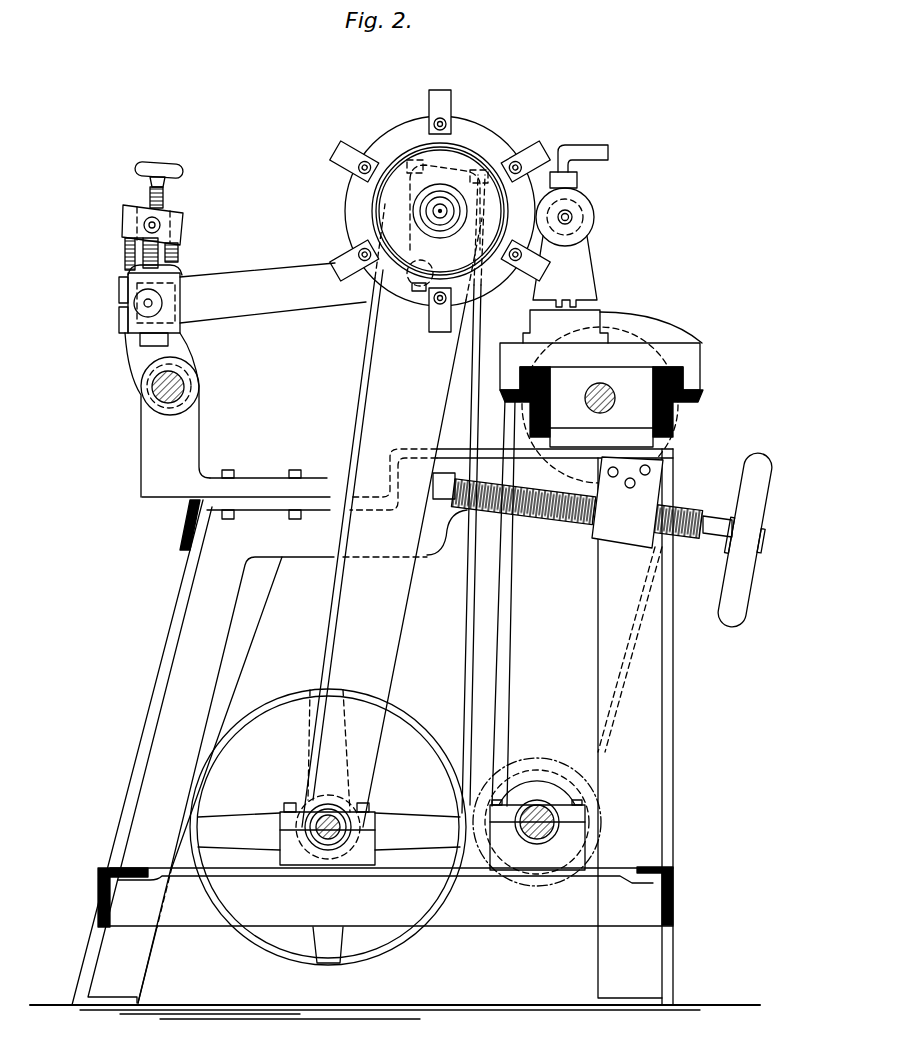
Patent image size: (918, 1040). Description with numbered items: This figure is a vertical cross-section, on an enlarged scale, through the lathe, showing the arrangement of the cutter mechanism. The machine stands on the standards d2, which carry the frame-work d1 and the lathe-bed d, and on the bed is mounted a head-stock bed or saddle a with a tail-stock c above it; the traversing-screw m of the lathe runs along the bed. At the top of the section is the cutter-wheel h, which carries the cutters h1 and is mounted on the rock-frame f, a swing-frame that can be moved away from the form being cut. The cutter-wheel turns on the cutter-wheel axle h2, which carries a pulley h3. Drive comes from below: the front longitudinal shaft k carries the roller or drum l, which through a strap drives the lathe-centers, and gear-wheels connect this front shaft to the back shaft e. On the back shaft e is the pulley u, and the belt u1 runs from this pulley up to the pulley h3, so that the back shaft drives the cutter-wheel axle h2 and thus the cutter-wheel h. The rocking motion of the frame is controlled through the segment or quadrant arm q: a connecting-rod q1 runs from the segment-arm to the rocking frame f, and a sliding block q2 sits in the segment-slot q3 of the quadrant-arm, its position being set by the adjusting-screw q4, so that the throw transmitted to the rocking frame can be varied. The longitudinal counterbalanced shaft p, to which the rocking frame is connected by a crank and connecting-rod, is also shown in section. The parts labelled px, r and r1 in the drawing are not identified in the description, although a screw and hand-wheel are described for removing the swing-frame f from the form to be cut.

The cutter-wheel h is at (440, 211).
The cutters h1 is at (540, 140).
The cutter-wheel axle h2 is at (437, 204).
The pulley h3 is at (447, 162).
The tail-stock c is at (565, 247).
The segment or quadrant arm q is at (176, 255).
The connecting-rod q1 is at (247, 293).
The sliding block q2 is at (128, 303).
The segment-slot q3 is at (140, 248).
The adjusting-screw q4 is at (160, 192).
The longitudinal counterbalanced shaft p is at (177, 386).
The pivot bracket px is at (167, 415).
The rock-frame f is at (392, 515).
The belt u1 is at (402, 494).
The head-stock bed or saddle a is at (700, 358).
The lathe-bed d is at (601, 402).
The traversing-screw m is at (610, 402).
The standards d2 is at (372, 702).
The feed screw r is at (582, 511).
The screw handle r1 is at (745, 540).
The pulley u is at (328, 827).
The back shaft e is at (329, 822).
The roller or drum l is at (513, 760).
The front longitudinal shaft k is at (545, 805).
The frame-work d1 is at (392, 897).